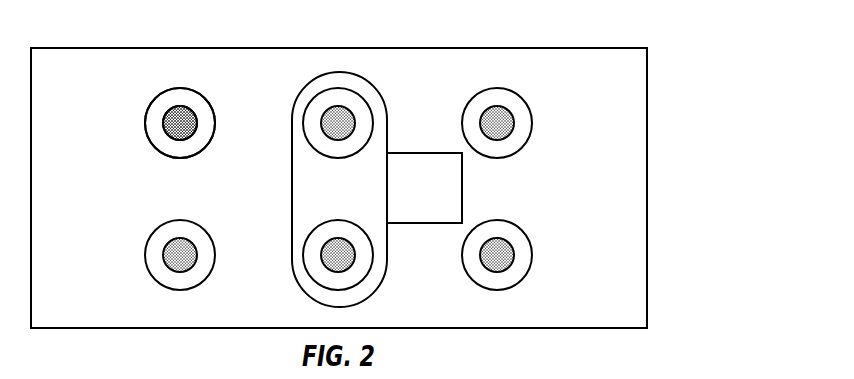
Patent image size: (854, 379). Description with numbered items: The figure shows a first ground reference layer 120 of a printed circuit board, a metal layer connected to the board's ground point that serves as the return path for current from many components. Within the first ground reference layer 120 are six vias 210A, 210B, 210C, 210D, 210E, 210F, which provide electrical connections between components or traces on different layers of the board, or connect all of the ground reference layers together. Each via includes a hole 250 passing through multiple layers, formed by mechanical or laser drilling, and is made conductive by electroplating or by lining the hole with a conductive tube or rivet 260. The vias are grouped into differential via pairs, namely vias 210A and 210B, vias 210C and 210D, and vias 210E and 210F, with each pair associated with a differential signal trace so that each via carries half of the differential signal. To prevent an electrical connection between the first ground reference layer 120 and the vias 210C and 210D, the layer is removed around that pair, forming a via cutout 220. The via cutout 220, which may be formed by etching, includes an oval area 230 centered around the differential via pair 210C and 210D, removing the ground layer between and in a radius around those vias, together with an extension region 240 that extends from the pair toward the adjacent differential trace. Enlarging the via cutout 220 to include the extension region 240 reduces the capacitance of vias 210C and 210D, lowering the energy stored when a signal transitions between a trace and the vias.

The first ground reference layer 120 is at (668, 170).
The via 210A is at (181, 88).
The via 210B is at (181, 220).
The via 210C is at (357, 107).
The via 210D is at (360, 268).
The via 210E is at (499, 88).
The via 210F is at (499, 220).
The via cutout 220 is at (389, 152).
The area 230 is at (360, 201).
The extension region 240 is at (443, 201).
The hole 250 is at (198, 122).
The conductive tube or rivet 260 is at (213, 135).